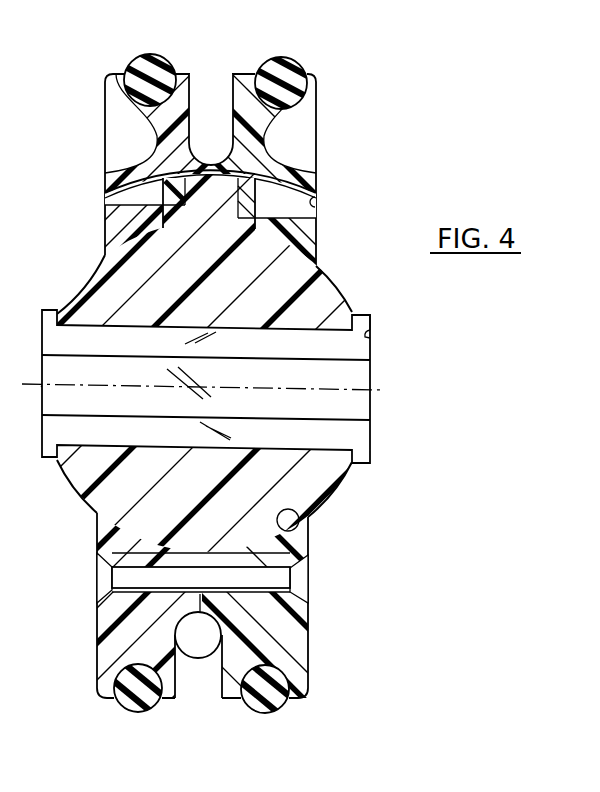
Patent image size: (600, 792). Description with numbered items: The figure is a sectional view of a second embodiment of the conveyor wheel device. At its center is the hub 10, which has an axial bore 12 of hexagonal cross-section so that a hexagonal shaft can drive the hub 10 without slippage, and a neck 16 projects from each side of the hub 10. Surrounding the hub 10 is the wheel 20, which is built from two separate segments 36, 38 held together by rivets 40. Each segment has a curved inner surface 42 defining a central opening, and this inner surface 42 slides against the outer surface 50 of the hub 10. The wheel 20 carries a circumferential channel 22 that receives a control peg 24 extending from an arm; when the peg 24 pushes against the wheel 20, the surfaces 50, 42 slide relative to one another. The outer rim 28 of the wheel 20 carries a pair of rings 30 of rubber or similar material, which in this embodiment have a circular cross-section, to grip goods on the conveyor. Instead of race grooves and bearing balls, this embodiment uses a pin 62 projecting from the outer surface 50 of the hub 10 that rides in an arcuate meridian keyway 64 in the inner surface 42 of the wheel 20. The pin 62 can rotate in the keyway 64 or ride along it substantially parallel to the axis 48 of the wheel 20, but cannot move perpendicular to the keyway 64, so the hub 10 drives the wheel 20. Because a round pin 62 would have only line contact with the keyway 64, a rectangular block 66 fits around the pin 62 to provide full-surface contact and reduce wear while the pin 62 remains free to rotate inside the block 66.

The hub 10 is at (72, 490).
The axial bore 12 is at (368, 335).
The neck 16 is at (368, 312).
The wheel 20 is at (322, 99).
The circumferential channel 22 is at (192, 78).
The control peg 24 is at (203, 658).
The outer rim 28 is at (172, 698).
The flat rings 30 is at (154, 56).
The segment 36 is at (97, 650).
The segment 38 is at (308, 640).
The rivets 40 is at (110, 587).
The curved inner surface 42 is at (300, 512).
The axis 48 is at (378, 390).
The outer surface 50 is at (335, 284).
The pin 62 is at (105, 205).
The arcuate meridian keyway 64 is at (313, 203).
The rectangular block 66 is at (316, 218).